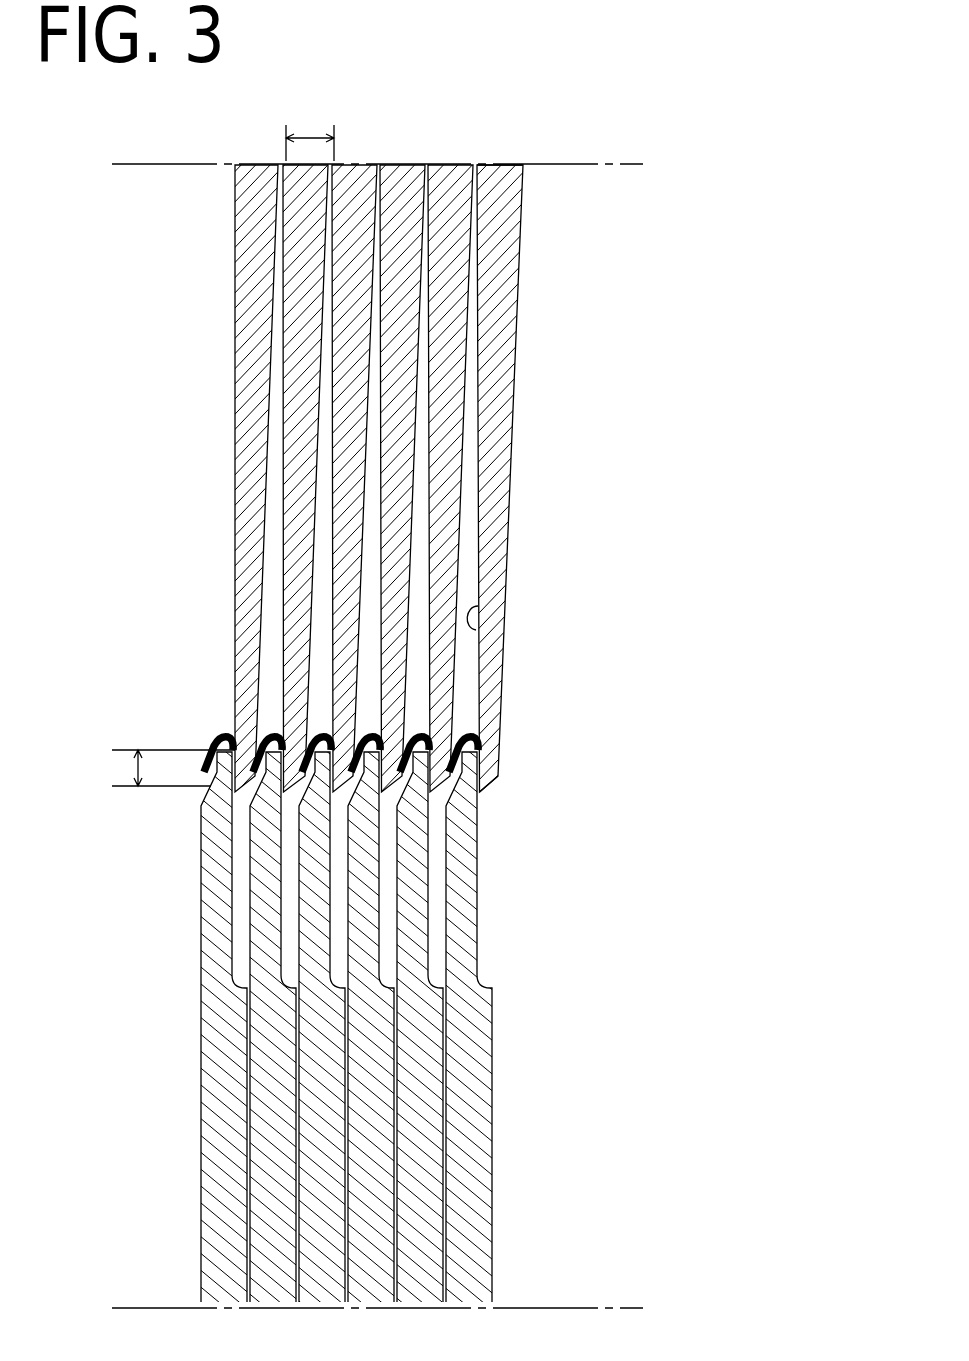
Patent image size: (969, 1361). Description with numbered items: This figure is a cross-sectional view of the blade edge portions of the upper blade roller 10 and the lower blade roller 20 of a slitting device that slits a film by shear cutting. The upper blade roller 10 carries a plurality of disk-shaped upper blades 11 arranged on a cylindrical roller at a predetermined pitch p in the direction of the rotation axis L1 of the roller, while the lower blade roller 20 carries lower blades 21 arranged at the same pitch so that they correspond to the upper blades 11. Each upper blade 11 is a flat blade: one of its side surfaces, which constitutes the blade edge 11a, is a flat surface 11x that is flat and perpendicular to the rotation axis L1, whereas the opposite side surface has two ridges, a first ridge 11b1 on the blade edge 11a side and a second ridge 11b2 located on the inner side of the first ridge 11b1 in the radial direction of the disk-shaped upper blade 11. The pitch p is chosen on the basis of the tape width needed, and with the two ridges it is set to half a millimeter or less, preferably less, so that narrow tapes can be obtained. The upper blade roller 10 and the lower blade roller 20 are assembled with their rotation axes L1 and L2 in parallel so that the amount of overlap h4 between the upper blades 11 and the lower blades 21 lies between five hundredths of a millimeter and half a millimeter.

The upper blade roller 10 is at (468, 556).
The upper blade 11 is at (551, 488).
The flat surface 11x is at (478, 607).
The blade edge 11a is at (484, 788).
The first ridge 11b1 is at (510, 750).
The second ridge 11b2 is at (537, 221).
The lower blade roller 20 is at (461, 923).
The lower blade 21 is at (495, 1122).
The rotation axis of the upper blade roller L1 is at (396, 164).
The rotation axis of the lower blade roller L2 is at (396, 1308).
The amount of overlap h4 is at (168, 768).
The pitch p is at (310, 136).